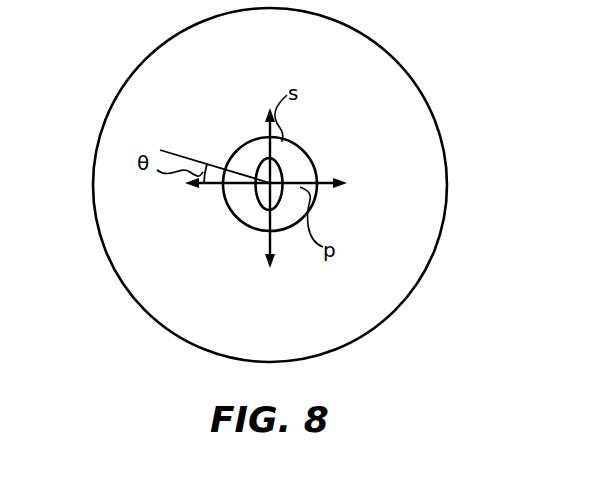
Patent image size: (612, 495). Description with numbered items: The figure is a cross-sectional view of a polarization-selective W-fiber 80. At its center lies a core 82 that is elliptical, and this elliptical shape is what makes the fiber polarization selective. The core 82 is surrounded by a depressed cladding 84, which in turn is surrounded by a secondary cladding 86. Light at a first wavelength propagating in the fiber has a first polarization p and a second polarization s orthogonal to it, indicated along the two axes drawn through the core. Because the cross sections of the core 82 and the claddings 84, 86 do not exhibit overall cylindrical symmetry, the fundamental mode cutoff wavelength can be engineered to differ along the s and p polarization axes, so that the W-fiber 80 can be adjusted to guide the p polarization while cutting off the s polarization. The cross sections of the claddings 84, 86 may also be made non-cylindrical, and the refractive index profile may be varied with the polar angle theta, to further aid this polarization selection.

The W-fiber 80 is at (82, 99).
The core 82 is at (284, 181).
The depressed cladding 84 is at (234, 166).
The secondary cladding 86 is at (213, 292).